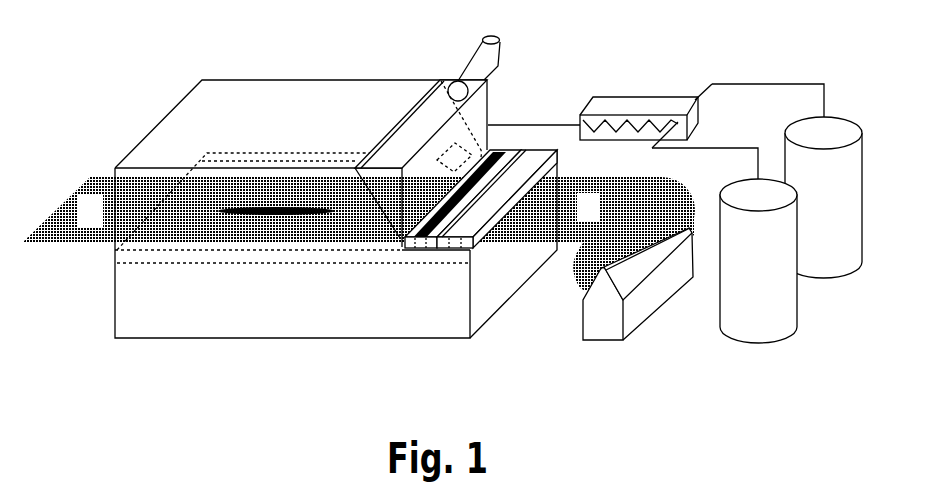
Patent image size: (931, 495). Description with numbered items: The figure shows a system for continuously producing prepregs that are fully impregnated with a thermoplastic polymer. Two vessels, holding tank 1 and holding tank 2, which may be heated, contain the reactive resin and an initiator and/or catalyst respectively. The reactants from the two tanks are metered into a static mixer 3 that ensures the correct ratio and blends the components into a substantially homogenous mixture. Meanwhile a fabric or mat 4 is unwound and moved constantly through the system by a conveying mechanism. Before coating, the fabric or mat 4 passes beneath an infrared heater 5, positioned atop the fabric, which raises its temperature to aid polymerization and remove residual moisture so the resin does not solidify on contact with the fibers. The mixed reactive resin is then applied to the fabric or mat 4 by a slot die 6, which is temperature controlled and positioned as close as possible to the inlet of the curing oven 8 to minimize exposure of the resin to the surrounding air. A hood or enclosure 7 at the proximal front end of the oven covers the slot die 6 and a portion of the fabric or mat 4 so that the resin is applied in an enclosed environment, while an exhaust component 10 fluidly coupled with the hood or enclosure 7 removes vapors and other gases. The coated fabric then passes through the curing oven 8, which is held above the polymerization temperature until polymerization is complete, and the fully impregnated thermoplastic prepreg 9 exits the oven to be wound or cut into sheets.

The holding tank 1 is at (724, 245).
The holding tank 2 is at (787, 181).
The static mixer 3 is at (600, 110).
The fabric or mat 4 is at (626, 234).
The infrared heater 5 is at (497, 199).
The slot die 6 is at (463, 199).
The hood or enclosure 7 is at (421, 163).
The curing oven 8 is at (336, 209).
The fully impregnated thermoplastic prepreg 9 is at (289, 210).
The exhaust component 10 is at (500, 50).